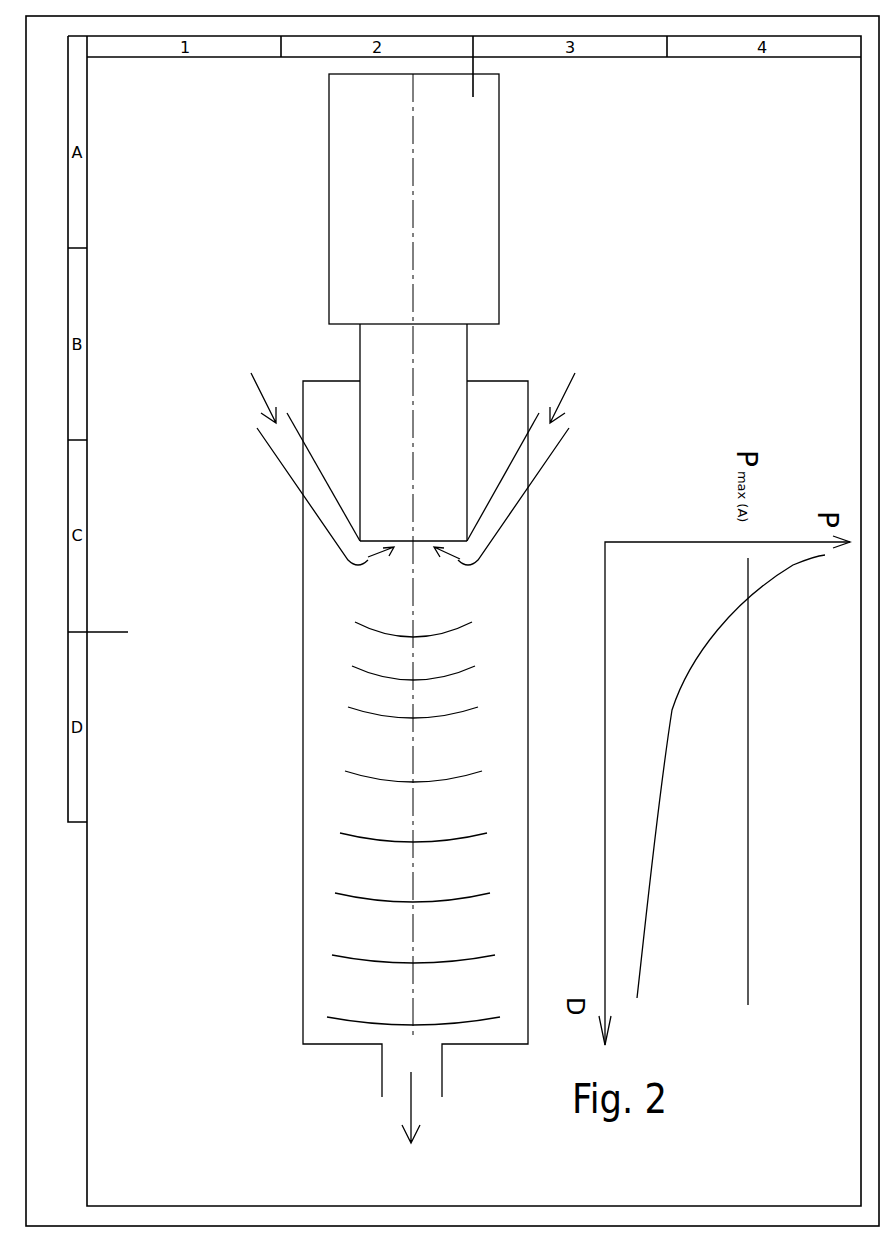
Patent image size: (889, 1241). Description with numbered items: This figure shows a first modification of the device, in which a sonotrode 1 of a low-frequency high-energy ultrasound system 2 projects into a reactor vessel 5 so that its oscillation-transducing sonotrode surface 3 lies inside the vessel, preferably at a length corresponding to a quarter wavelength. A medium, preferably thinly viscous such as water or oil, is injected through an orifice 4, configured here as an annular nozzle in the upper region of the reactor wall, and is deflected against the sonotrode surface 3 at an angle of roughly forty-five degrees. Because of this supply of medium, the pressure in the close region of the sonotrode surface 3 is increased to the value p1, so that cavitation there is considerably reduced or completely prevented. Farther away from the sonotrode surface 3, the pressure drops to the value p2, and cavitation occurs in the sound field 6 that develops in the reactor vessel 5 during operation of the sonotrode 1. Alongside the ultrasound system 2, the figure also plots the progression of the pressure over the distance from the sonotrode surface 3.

The sonotrode 1 is at (467, 347).
The low-frequency high-energy ultrasound system 2 is at (499, 218).
The sonotrode surface 3 is at (379, 541).
The orifice 4 is at (280, 460).
The reactor vessel 5 is at (528, 523).
The sound field 6 is at (345, 771).
The pressure value p1 is at (400, 562).
The pressure value p2 is at (370, 988).